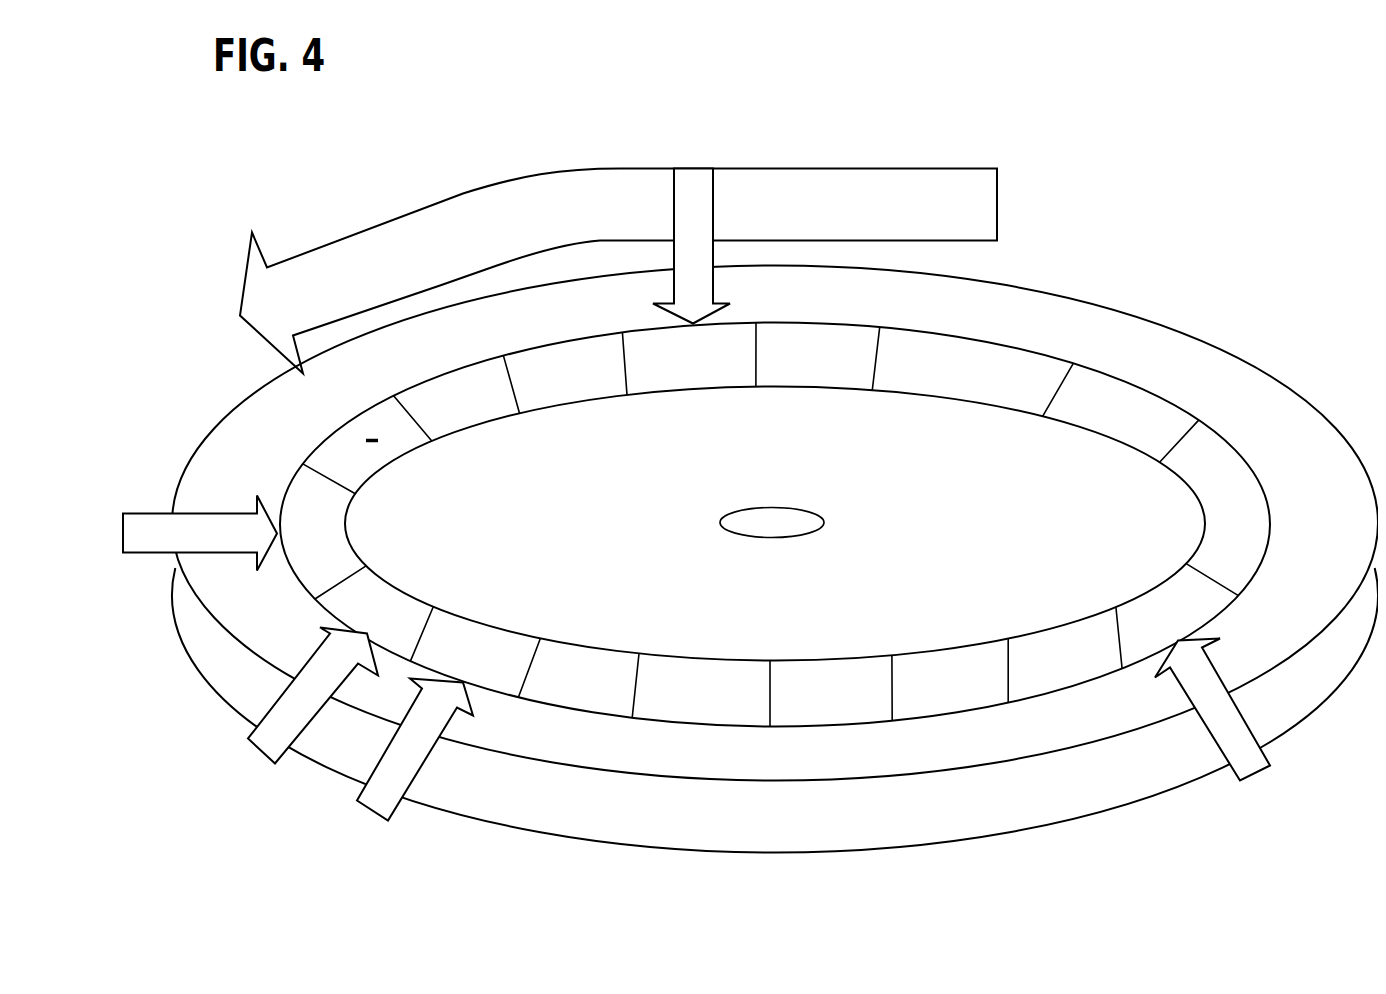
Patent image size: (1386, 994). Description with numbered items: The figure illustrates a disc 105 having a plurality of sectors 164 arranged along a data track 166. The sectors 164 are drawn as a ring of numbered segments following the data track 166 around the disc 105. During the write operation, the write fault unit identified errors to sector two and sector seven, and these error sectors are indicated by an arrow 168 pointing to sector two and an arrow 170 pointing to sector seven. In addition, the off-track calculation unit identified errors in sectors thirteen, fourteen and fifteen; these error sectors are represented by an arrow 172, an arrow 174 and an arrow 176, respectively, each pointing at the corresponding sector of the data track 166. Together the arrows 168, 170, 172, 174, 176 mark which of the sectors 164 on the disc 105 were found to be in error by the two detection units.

The disc 105 is at (1093, 204).
The sectors 164 is at (613, 748).
The data track 166 is at (402, 587).
The arrow 168 is at (713, 228).
The arrow 170 is at (1233, 713).
The arrow 172 is at (370, 808).
The arrow 174 is at (258, 748).
The arrow 176 is at (122, 530).